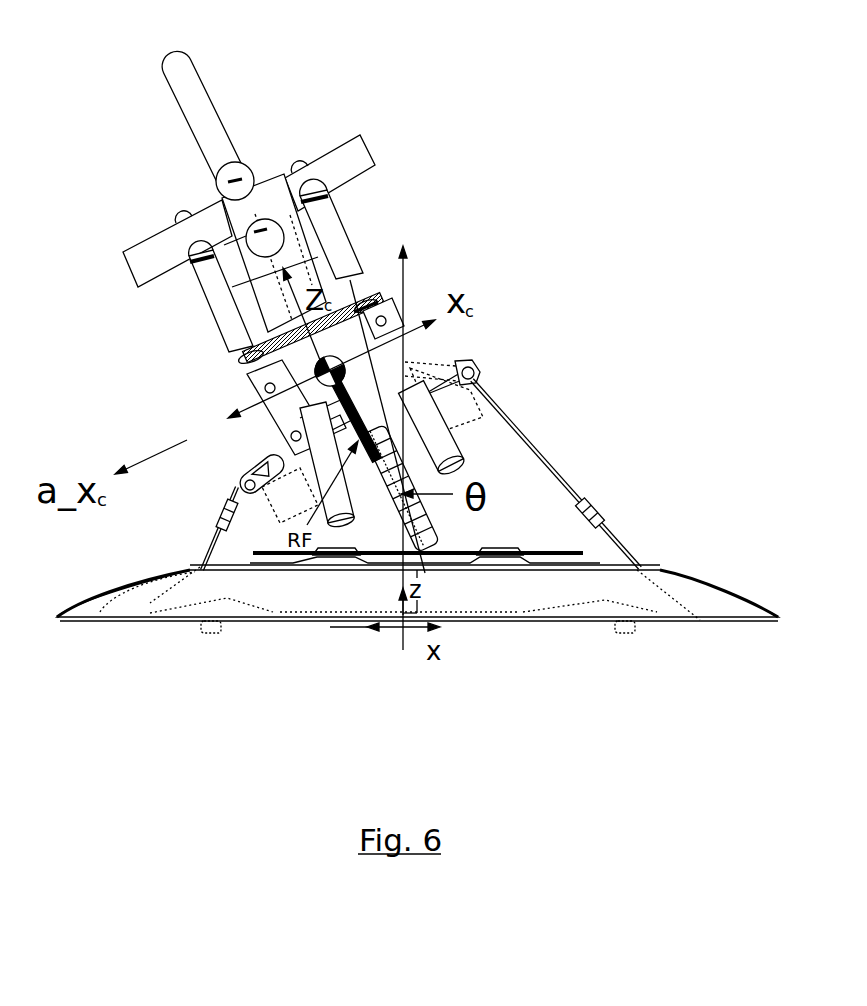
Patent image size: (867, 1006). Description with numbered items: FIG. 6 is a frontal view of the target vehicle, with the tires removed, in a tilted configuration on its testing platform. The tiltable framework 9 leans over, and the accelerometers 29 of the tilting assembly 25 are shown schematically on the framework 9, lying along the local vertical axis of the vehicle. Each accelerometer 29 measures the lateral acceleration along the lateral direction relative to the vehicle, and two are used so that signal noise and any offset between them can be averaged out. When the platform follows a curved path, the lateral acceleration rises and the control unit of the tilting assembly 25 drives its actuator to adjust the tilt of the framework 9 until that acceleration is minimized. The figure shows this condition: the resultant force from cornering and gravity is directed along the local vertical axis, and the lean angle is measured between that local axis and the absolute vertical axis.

The framework 9 is at (244, 73).
The tilting assembly 25 is at (489, 351).
The accelerometers 29 is at (300, 371).